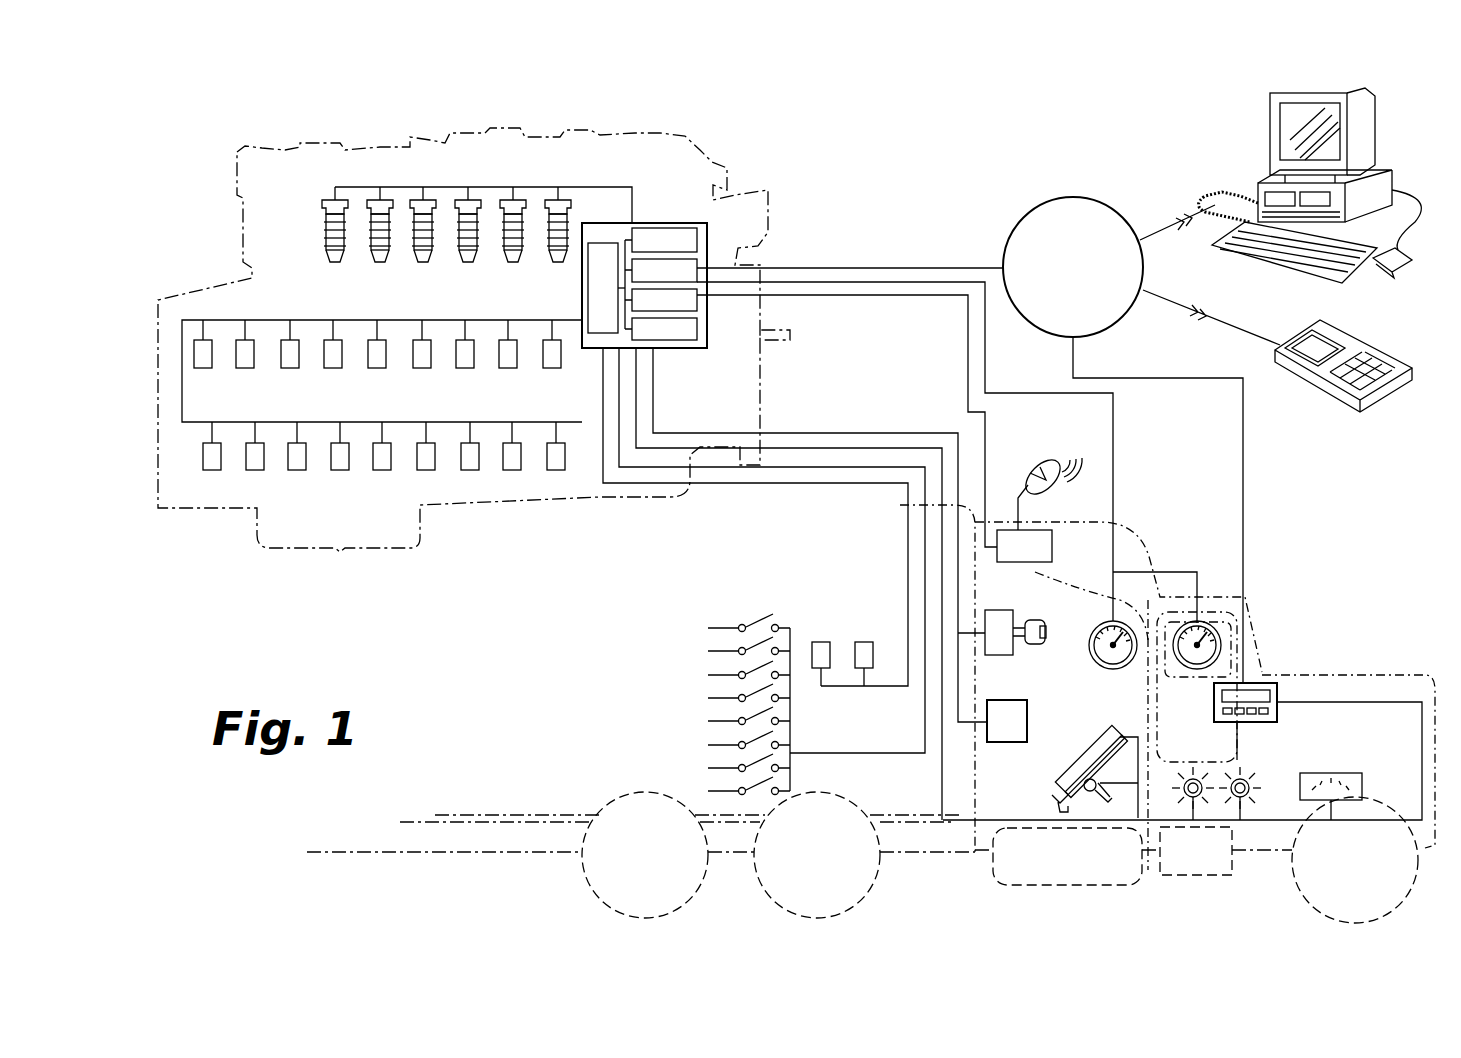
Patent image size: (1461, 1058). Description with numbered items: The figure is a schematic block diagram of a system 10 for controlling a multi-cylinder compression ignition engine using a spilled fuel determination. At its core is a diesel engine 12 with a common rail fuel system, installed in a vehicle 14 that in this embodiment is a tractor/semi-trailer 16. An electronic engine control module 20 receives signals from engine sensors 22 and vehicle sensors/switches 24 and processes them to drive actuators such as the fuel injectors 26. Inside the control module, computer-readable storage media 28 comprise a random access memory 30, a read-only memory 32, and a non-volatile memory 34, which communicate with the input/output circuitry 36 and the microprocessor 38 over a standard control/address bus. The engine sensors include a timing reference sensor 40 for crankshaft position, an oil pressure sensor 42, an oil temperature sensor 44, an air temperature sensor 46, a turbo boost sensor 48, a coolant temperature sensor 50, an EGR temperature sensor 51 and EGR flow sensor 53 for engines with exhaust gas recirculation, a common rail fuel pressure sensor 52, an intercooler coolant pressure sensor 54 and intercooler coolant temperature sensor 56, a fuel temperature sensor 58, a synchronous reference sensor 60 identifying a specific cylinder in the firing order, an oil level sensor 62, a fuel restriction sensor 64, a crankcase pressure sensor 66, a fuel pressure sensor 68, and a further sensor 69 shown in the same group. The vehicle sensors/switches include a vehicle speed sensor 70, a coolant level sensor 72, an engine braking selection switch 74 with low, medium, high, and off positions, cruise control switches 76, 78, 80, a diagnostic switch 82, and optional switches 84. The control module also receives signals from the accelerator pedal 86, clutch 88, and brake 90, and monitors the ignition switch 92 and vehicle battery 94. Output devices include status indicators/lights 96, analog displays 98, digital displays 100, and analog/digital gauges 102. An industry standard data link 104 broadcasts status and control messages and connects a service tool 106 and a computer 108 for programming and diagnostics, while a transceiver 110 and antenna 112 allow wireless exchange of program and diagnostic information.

The system 10 is at (892, 172).
The diesel engine 12 is at (500, 125).
The vehicle 14 is at (1142, 527).
The tractor/semi-trailer 16 is at (1325, 670).
The electronic engine control module 20 is at (647, 238).
The engine sensors 22 is at (353, 393).
The vehicle sensors/switches 24 is at (633, 703).
The fuel injectors 26 is at (384, 172).
The computer-readable storage media 28 is at (710, 242).
The random access memory 30 is at (668, 228).
The read-only memory 32 is at (704, 263).
The non-volatile memory 34 is at (698, 300).
The input/output circuitry 36 is at (698, 330).
The microprocessor 38 is at (588, 290).
The timing reference sensor 40 is at (561, 355).
The oil pressure sensor 42 is at (517, 355).
The oil temperature sensor 44 is at (474, 355).
The air temperature sensor 46 is at (431, 355).
The turbo boost sensor 48 is at (386, 355).
The coolant temperature sensor 50 is at (342, 355).
The EGR temperature sensor 51 is at (254, 355).
The common rail fuel pressure sensor 52 is at (299, 355).
The EGR flow sensor 53 is at (212, 355).
The intercooler coolant pressure sensor 54 is at (221, 458).
The intercooler coolant temperature sensor 56 is at (264, 458).
The fuel temperature sensor 58 is at (306, 458).
The synchronous reference sensor 60 is at (349, 458).
The oil level sensor 62 is at (391, 458).
The fuel restriction sensor 64 is at (435, 458).
The crankcase pressure sensor 66 is at (479, 458).
The fuel pressure sensor 68 is at (521, 458).
The variable speed governor VSG 69 is at (565, 458).
The vehicle speed sensor 70 is at (873, 660).
The coolant level sensor 72 is at (830, 660).
The engine braking selection switch 74 is at (552, 746).
The cruise control switch 76 is at (610, 722).
The cruise control switch 78 is at (628, 698).
The cruise control switch 80 is at (637, 675).
The diagnostic switch 82 is at (650, 651).
The optional switches 84 is at (656, 628).
The accelerator pedal 86 is at (1064, 749).
The clutch 88 is at (1127, 730).
The brake 90 is at (1100, 738).
The ignition switch 92 is at (1000, 655).
The vehicle battery 94 is at (992, 742).
The status indicators/lights 96 is at (1266, 778).
The analog displays 98 is at (1338, 772).
The digital displays 100 is at (1214, 700).
The analog/digital gauges 102 is at (1100, 608).
The data link 104 is at (1090, 185).
The service tool 106 is at (1345, 328).
The computer 108 is at (1385, 138).
The transceiver 110 is at (1052, 542).
The antenna 112 is at (1022, 458).